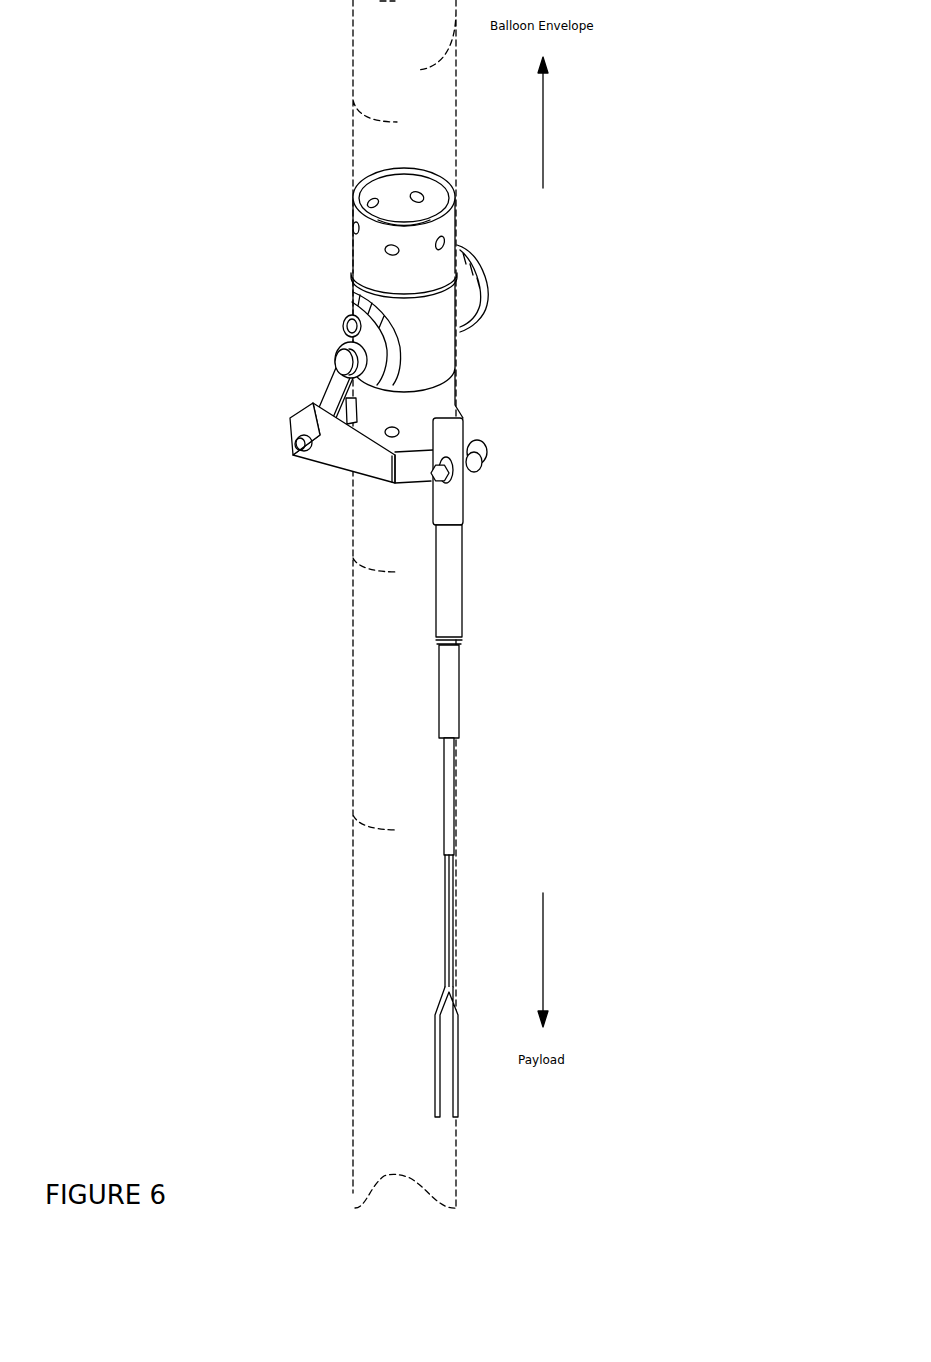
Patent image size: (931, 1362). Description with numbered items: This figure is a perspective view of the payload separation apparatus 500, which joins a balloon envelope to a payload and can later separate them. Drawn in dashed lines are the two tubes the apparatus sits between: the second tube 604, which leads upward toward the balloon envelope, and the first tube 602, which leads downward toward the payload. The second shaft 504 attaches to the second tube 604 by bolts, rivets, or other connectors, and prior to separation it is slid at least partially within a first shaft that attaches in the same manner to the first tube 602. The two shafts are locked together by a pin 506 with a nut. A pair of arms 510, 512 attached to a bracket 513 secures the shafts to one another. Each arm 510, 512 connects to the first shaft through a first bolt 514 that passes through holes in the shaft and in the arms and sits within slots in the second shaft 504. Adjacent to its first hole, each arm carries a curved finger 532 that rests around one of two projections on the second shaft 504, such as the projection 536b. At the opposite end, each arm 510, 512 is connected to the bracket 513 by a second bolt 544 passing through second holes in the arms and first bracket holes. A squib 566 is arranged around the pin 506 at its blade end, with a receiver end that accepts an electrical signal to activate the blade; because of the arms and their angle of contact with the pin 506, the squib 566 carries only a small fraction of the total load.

The payload separation apparatus 500 is at (342, 666).
The second shaft 504 is at (353, 238).
The pin 506 is at (463, 428).
The arm 510 is at (325, 373).
The arm 512 is at (487, 291).
The bracket 513 is at (298, 408).
The first bolt 514 is at (343, 345).
The curved finger 532 is at (354, 300).
The projection 536b is at (352, 325).
The second bolt 544 is at (283, 425).
The squib 566 is at (462, 583).
The first tube 602 is at (353, 990).
The second tube 604 is at (353, 60).